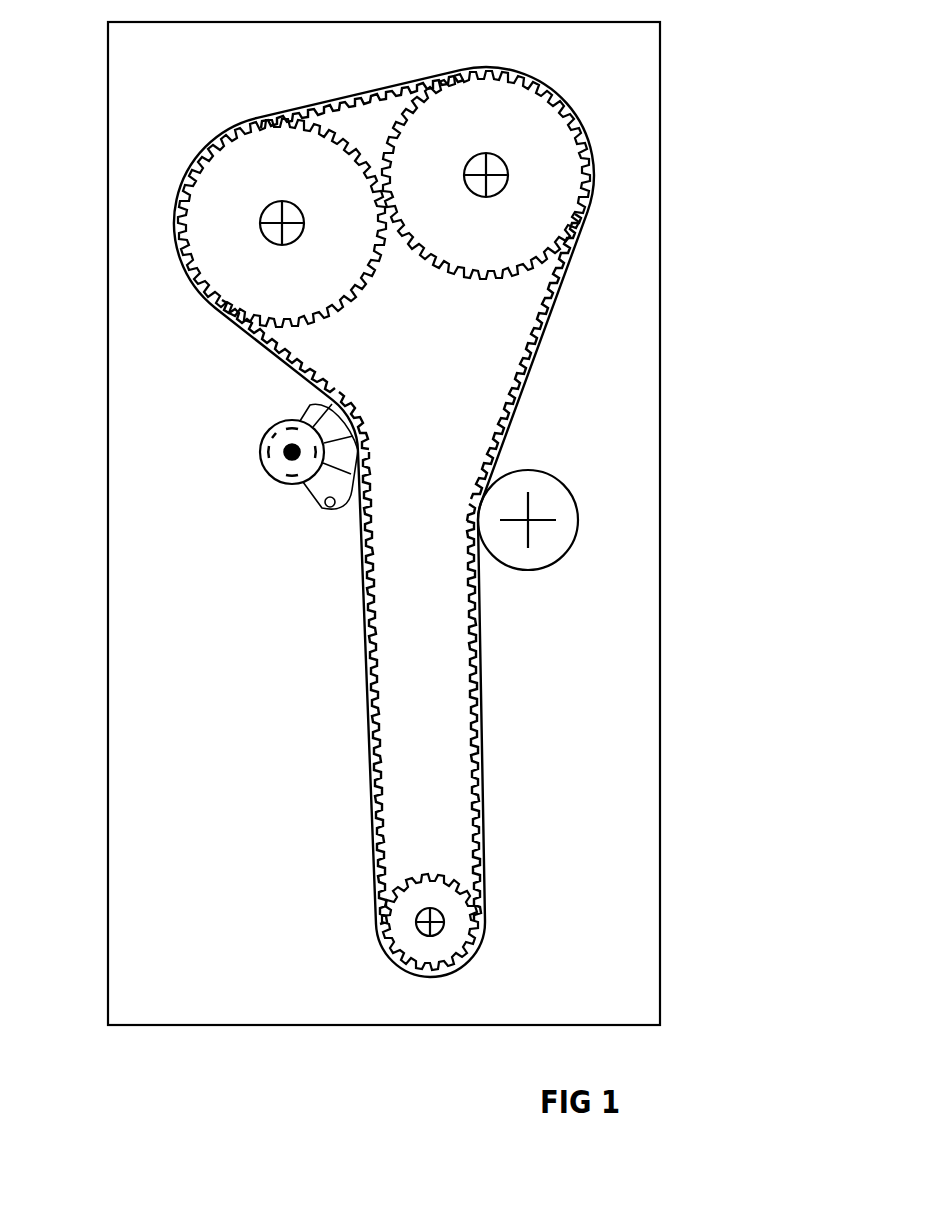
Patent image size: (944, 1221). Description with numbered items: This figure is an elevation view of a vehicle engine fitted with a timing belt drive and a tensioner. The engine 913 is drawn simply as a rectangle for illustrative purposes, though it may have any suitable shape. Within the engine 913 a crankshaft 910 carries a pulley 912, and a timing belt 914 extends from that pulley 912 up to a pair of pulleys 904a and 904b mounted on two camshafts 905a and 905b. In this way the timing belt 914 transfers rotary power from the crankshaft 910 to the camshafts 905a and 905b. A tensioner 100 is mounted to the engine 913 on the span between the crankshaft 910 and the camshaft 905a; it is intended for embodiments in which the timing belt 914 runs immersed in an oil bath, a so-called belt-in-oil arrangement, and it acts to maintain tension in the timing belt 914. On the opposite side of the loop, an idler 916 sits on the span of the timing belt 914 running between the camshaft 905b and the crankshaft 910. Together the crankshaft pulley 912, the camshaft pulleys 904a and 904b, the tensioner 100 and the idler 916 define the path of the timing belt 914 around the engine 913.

The tensioner 100 is at (262, 445).
The pulley 904a is at (215, 238).
The pulley 904b is at (553, 168).
The camshaft 905a is at (261, 216).
The camshaft 905b is at (503, 193).
The crankshaft 910 is at (415, 928).
The pulley 912 is at (402, 903).
The engine 913 is at (122, 512).
The timing belt 914 is at (368, 752).
The idler 916 is at (580, 523).